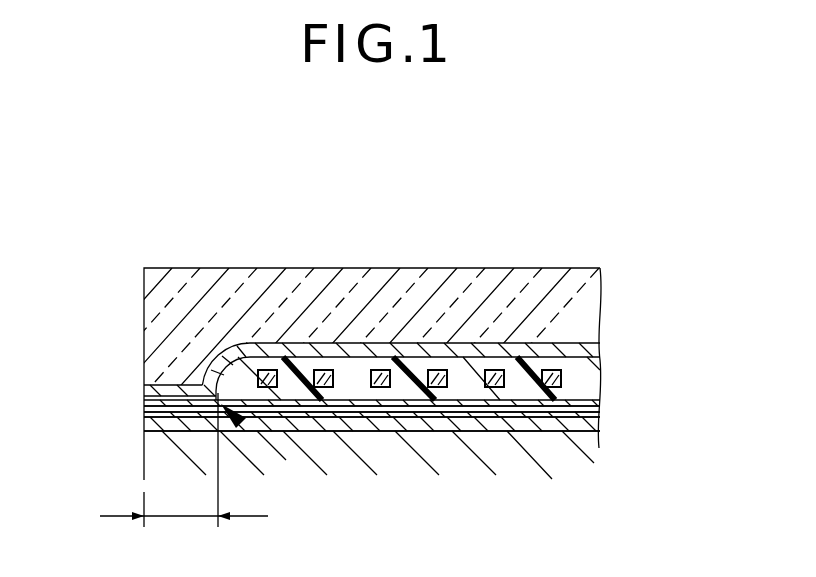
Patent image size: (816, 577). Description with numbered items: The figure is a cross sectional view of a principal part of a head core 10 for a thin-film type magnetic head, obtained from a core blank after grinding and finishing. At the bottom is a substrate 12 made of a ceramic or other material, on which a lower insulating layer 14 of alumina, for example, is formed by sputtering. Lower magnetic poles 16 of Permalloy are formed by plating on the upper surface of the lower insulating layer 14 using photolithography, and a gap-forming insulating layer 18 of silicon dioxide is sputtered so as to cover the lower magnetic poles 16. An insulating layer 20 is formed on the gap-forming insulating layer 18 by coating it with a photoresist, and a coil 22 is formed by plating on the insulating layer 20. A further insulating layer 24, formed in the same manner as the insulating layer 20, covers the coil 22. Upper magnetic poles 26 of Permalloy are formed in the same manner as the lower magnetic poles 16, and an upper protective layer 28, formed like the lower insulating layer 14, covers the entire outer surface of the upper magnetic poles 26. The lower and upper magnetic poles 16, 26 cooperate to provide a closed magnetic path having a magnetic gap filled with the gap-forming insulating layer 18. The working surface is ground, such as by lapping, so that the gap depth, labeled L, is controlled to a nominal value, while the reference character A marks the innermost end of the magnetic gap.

The head core 10 is at (431, 179).
The substrate 12 is at (163, 459).
The lower insulating layer 14 is at (540, 430).
The lower magnetic poles 16 is at (148, 410).
The gap-forming insulating layer 18 is at (162, 390).
The insulating layer 20 is at (582, 394).
The coil 22 is at (440, 370).
The insulating layer 24 is at (372, 414).
The upper magnetic poles 26 is at (370, 350).
The upper protective layer 28 is at (208, 278).